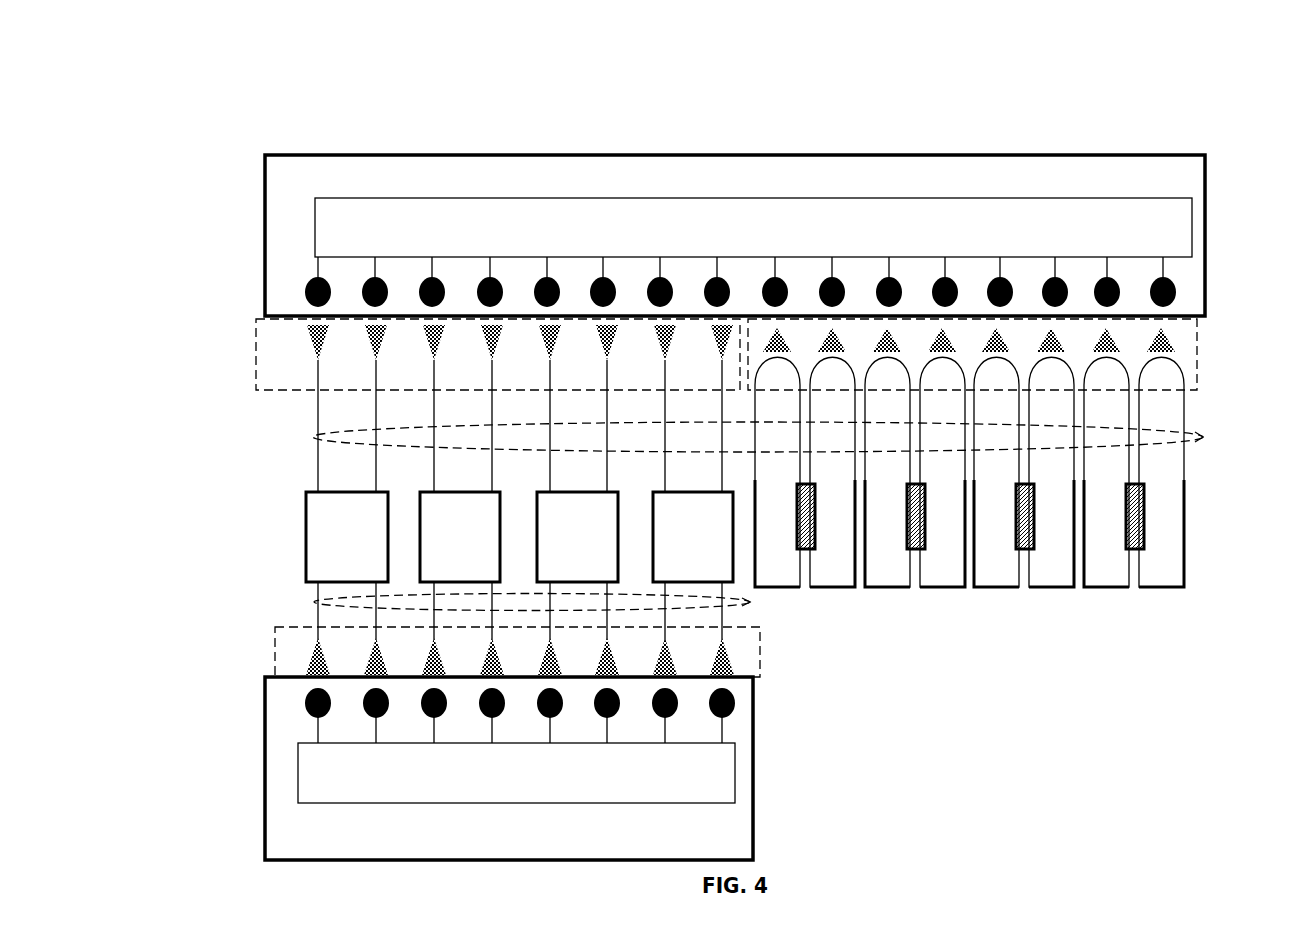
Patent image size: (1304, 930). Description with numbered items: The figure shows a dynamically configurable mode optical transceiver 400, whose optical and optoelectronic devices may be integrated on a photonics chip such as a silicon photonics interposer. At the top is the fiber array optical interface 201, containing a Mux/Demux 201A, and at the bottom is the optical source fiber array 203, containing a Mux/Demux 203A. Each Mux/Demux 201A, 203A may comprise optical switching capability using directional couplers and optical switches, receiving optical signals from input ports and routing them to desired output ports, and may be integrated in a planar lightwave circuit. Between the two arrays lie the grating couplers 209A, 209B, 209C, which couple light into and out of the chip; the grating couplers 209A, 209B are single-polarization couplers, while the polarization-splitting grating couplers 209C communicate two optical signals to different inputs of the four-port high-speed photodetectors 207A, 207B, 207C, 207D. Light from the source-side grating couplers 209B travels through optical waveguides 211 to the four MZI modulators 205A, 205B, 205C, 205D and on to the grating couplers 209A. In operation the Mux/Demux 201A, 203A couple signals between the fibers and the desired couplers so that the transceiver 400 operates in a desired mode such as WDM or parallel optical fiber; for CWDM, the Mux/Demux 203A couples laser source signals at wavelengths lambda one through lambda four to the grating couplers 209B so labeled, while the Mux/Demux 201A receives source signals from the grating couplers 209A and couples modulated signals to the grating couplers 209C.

The optical transceiver 400 is at (222, 94).
The fiber array optical interface 201 is at (735, 235).
The Mux/Demux 201A is at (753, 227).
The optical source fiber array 203 is at (509, 768).
The Mux/Demux 203A is at (516, 773).
The MZI modulator 205A is at (347, 537).
The MZI modulator 205B is at (460, 537).
The MZI modulator 205C is at (577, 537).
The MZI modulator 205D is at (693, 537).
The photodetector 207A is at (815, 537).
The photodetector 207B is at (925, 537).
The photodetector 207C is at (1034, 537).
The photodetector 207D is at (1144, 537).
The grating couplers 209A is at (256, 355).
The grating couplers 209B is at (275, 648).
The polarization-splitting grating couplers 209C is at (1197, 346).
The optical waveguides 211 is at (318, 437).